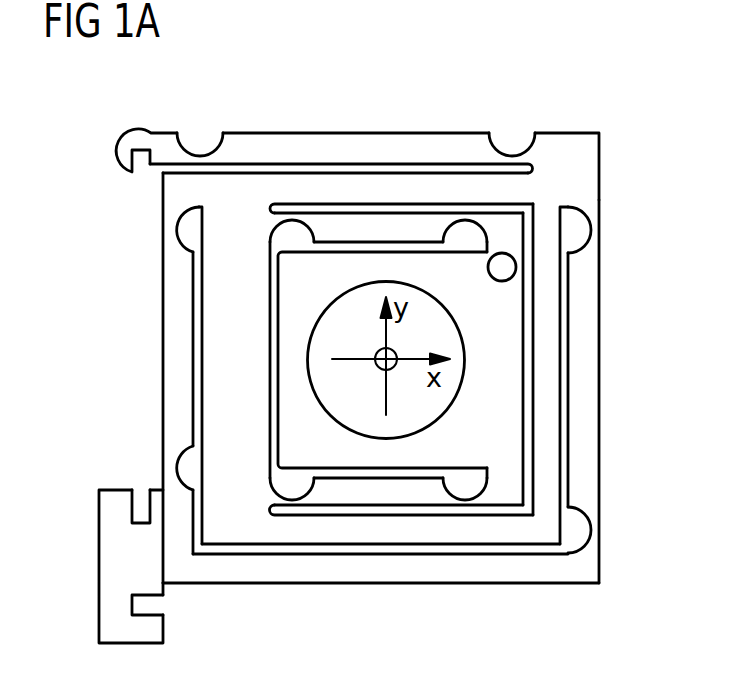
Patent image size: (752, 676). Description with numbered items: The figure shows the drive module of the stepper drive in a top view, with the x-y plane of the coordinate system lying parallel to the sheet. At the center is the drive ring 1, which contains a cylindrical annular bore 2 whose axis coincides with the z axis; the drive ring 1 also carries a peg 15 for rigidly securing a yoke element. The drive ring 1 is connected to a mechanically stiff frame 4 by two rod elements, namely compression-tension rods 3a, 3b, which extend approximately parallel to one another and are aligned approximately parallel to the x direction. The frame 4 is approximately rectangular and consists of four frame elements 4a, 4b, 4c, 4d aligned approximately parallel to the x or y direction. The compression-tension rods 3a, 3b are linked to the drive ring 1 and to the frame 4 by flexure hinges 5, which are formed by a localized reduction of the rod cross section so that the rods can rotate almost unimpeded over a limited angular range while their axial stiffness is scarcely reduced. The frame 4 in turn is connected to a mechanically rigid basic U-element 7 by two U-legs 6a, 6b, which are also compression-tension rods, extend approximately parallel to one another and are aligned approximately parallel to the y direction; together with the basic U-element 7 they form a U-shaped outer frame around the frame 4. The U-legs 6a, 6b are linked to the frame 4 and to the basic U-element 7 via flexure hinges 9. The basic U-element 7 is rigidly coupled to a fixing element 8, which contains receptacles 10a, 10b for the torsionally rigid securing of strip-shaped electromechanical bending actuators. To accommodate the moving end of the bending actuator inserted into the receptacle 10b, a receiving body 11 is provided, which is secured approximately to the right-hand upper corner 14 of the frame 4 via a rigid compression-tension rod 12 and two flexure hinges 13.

The drive ring 1 is at (291, 385).
The cylindrical annular bore 2 is at (425, 413).
The rod element (compression-tension rod) 3a is at (357, 226).
The rod element (compression-tension rod) 3b is at (408, 490).
The frame 4 is at (380, 356).
The frame element 4a is at (393, 187).
The frame element 4b is at (548, 380).
The frame element 4c is at (349, 530).
The frame element 4d is at (227, 365).
The flexure hinge 5 is at (293, 221).
The U-leg (compression-tension rod) 6a is at (592, 312).
The U-leg (compression-tension rod) 6b is at (176, 297).
The basic U-element 7 is at (522, 570).
The fixing element 8 is at (110, 565).
The flexure hinge 9 is at (167, 225).
The receptacle 10a is at (155, 603).
The receptacle 10b is at (140, 498).
The receiving body 11 is at (141, 139).
The rigid compression-tension rod 12 is at (423, 147).
The flexure hinge 13 is at (203, 157).
The right-hand upper corner 14 is at (577, 148).
The peg 15 is at (503, 278).